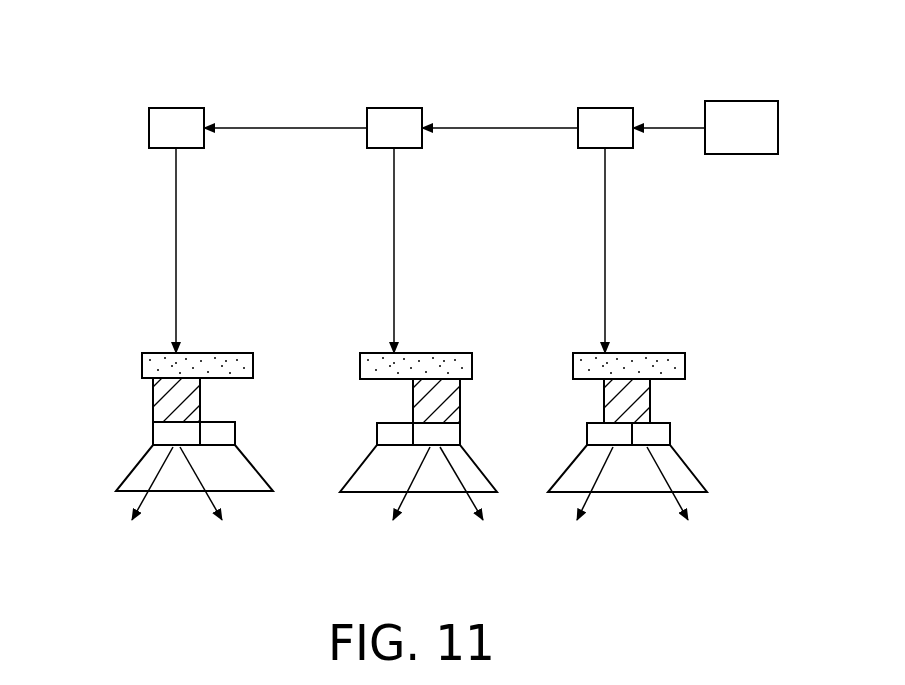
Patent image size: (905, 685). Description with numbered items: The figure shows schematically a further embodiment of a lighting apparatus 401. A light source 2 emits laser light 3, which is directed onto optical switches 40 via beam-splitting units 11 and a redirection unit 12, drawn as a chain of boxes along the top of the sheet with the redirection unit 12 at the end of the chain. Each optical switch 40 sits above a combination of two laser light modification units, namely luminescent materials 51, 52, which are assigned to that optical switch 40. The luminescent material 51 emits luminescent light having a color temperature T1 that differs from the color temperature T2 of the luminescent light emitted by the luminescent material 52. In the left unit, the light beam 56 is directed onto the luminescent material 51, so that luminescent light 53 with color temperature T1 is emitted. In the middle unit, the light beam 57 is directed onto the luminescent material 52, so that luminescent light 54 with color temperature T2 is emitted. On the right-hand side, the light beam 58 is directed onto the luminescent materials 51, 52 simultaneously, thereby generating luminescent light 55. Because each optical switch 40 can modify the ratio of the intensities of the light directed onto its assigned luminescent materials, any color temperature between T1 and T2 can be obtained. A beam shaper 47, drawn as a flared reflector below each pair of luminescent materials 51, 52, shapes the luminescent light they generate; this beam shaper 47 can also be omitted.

The lighting apparatus 401 is at (521, 65).
The light source 2 is at (742, 100).
The laser light 3 is at (670, 132).
The beam-splitting unit 11 is at (396, 107).
The redirection unit 12 is at (178, 107).
The optical switch 40 is at (155, 352).
The light beam 56 is at (193, 402).
The light beam 57 is at (460, 410).
The light beam 58 is at (650, 410).
The luminescent material 51 is at (155, 432).
The luminescent material 52 is at (232, 432).
The beam shaper 47 is at (126, 478).
The luminescent light 53 is at (172, 523).
The luminescent light 54 is at (437, 523).
The luminescent light 55 is at (636, 523).